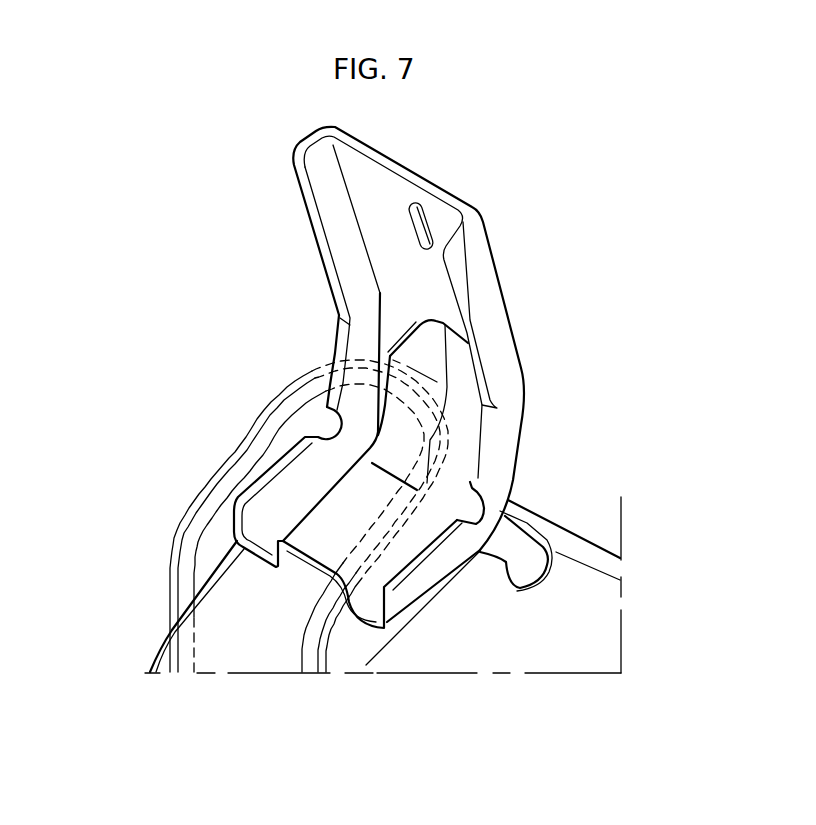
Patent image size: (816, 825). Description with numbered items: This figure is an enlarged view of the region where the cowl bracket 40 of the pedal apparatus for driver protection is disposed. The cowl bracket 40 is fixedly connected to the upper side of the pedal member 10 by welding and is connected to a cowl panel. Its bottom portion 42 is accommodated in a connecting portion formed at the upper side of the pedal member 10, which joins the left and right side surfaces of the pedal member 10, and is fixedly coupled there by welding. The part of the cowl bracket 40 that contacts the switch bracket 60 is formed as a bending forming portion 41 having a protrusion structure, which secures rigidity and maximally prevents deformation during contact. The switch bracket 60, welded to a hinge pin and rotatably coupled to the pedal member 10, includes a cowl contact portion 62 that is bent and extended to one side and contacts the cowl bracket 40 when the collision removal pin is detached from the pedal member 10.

The pedal member 10 is at (597, 635).
The cowl bracket 40 is at (492, 335).
The bending forming portion 41 is at (397, 378).
The bottom portion 42 is at (413, 590).
The switch bracket 60 is at (162, 555).
The cowl contact portion 62 is at (222, 477).